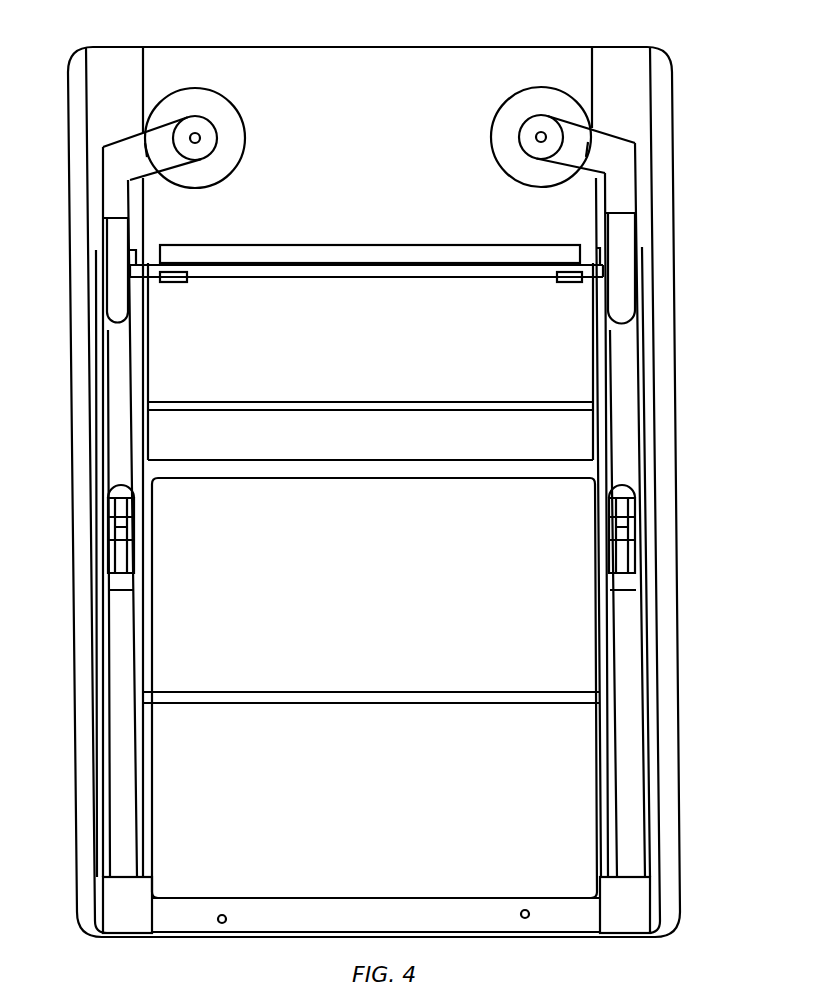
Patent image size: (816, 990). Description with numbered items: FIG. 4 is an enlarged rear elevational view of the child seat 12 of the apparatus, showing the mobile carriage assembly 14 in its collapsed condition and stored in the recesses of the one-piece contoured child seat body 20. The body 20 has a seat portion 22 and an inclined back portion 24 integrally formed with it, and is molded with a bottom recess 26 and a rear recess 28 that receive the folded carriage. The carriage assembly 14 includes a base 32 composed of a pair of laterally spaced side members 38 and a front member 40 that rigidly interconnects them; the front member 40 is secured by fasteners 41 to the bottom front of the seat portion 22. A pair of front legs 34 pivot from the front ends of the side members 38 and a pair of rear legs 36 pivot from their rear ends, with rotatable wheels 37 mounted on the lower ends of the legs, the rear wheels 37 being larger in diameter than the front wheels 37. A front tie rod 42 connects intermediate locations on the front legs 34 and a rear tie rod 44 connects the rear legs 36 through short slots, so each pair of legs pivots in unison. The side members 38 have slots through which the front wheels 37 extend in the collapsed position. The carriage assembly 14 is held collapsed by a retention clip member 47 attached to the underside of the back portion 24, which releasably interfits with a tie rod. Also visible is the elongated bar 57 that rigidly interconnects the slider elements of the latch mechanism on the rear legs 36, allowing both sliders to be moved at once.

The child seat 12 is at (684, 497).
The mobile carriage assembly 14 is at (93, 450).
The child seat body 20 is at (489, 46).
The seat portion 22 is at (305, 938).
The back portion 24 is at (305, 47).
The bottom recess 26 is at (374, 688).
The rear recess 28 is at (372, 462).
The base 32 is at (151, 381).
The front legs 34 is at (127, 660).
The rear legs 36 is at (108, 236).
The wheels 37 is at (242, 119).
The side members 38 is at (145, 778).
The front member 40 is at (408, 898).
The fasteners 41 is at (225, 915).
The front tie rod 42 is at (405, 693).
The rear tie rod 44 is at (465, 263).
The retention clip member 47 is at (366, 282).
The elongated bar 57 is at (417, 412).